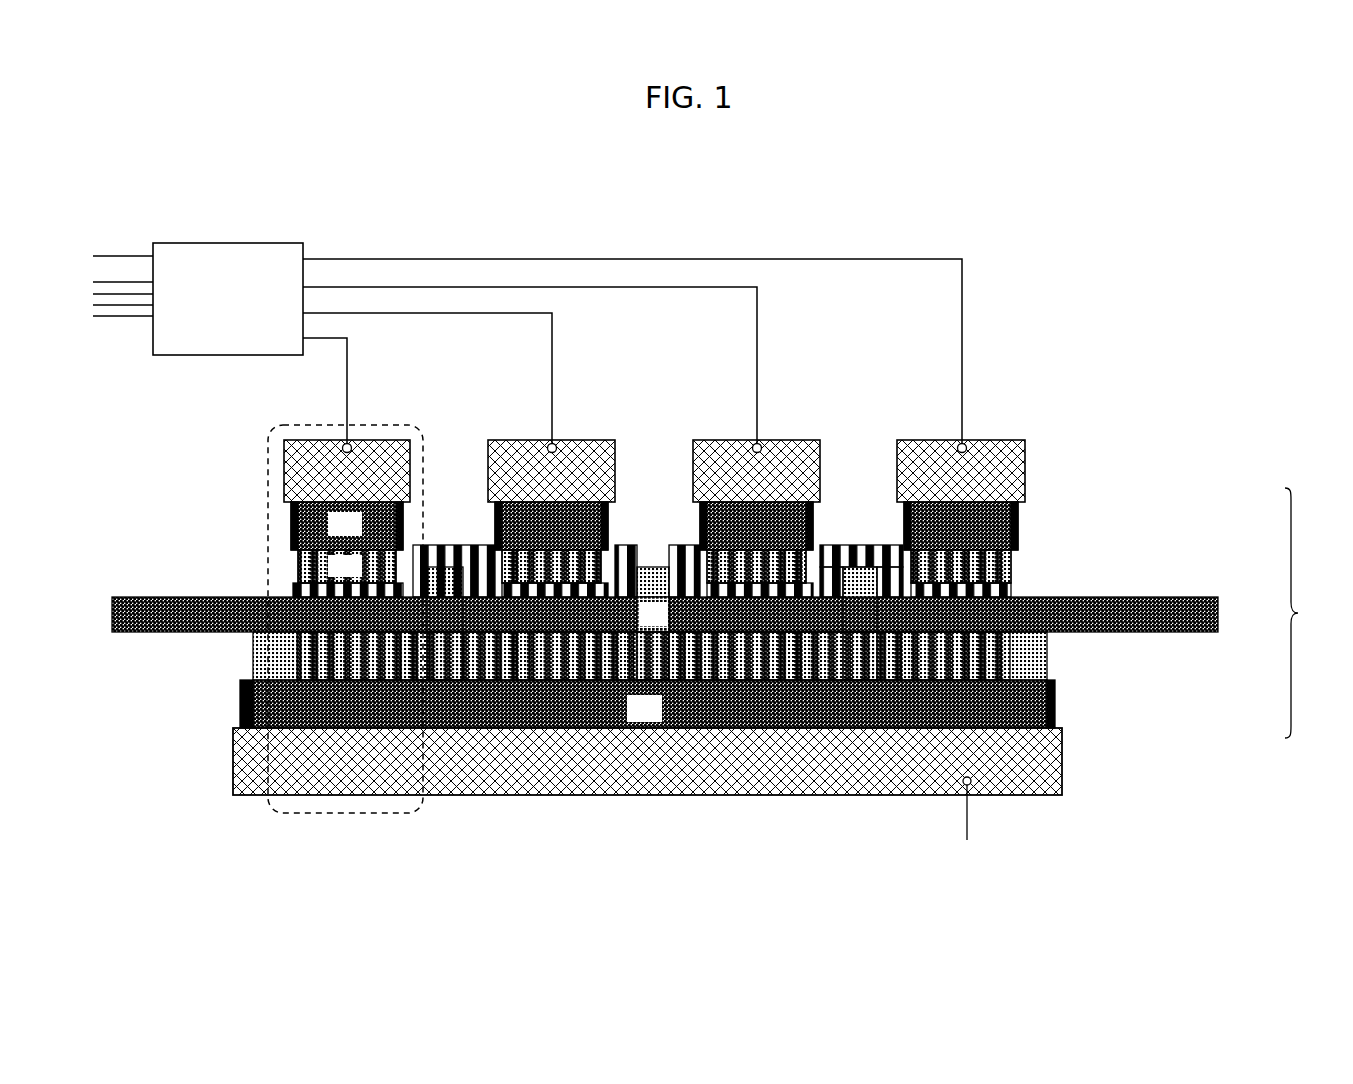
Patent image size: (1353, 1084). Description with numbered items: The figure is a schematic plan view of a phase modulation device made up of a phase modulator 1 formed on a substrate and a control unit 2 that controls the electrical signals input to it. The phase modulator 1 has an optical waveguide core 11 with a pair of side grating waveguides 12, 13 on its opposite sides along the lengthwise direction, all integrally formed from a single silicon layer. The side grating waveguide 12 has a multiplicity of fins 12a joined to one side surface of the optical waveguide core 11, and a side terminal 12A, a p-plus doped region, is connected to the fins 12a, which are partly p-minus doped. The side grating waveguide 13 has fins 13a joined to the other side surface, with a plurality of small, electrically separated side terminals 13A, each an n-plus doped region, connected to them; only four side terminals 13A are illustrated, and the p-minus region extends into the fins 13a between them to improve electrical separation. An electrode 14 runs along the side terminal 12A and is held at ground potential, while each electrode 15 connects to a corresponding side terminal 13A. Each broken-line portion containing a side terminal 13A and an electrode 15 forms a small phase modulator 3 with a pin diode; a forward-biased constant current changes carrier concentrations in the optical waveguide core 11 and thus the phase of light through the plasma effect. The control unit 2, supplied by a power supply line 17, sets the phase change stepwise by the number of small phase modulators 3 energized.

The phase modulator 1 is at (1302, 613).
The control unit 2 is at (226, 243).
The small phase modulator 3 is at (331, 818).
The optical waveguide core 11 is at (1193, 612).
The side grating waveguide 12 is at (1067, 700).
The side terminal 12A is at (1057, 718).
The fins 12a is at (817, 633).
The side grating waveguide 13 is at (1035, 529).
The side terminals 13A is at (1018, 515).
The fins 13a is at (855, 545).
The electrode 14 is at (640, 772).
The electrode 15 is at (1025, 455).
The power supply line 17 is at (116, 256).